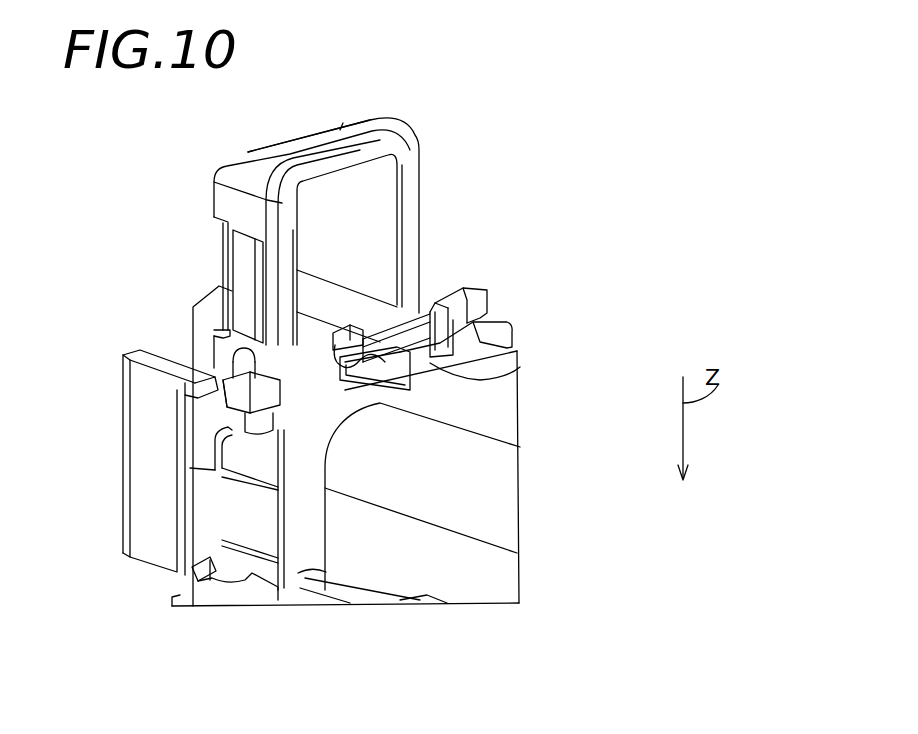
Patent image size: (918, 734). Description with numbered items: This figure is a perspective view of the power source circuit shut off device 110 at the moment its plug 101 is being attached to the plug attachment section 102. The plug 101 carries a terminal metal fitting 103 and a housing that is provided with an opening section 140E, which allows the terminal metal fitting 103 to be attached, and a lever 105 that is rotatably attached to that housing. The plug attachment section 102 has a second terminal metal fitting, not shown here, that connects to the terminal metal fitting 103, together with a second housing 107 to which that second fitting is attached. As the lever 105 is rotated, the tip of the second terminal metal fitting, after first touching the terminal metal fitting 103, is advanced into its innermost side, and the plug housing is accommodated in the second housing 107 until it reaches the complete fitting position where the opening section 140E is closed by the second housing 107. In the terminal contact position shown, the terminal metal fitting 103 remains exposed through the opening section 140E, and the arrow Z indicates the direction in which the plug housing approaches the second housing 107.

The plug 101 is at (432, 194).
The plug attachment section 102 is at (517, 418).
The terminal metal fitting 103 is at (490, 293).
The lever 105 is at (420, 160).
The second housing 107 is at (519, 485).
The power source circuit shut off device 110 is at (678, 180).
The opening section 140E is at (516, 376).